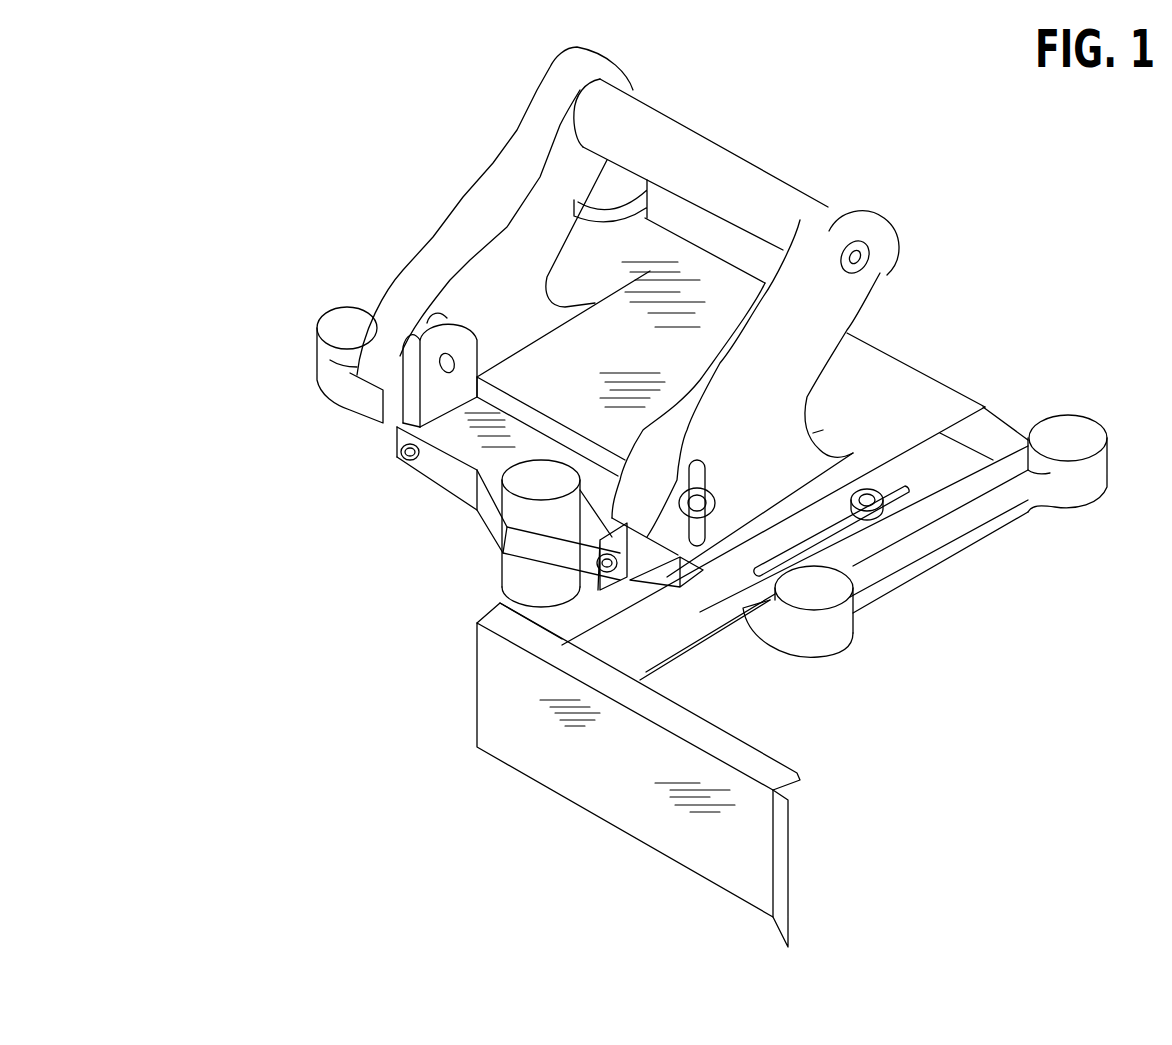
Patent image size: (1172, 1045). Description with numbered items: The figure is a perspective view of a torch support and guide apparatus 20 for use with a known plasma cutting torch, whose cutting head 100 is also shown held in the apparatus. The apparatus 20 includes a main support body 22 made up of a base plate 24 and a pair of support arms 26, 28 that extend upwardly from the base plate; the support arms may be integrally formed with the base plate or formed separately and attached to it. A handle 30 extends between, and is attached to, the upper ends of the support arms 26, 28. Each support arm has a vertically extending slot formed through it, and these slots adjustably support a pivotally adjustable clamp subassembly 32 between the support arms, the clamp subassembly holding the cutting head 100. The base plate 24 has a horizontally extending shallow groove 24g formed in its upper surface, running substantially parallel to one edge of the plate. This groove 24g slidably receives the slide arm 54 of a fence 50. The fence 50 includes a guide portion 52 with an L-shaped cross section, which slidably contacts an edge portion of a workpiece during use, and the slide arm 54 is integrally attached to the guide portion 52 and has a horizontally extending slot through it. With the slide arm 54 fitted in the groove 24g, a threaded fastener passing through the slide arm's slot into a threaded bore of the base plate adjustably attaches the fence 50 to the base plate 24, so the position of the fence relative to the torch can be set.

The torch support and guide apparatus 20 is at (357, 210).
The main support body 22 is at (260, 390).
The base plate 24 is at (903, 423).
The groove 24g is at (968, 420).
The support arm 26 is at (518, 309).
The support arm 28 is at (773, 443).
The handle 30 is at (720, 160).
The clamp subassembly 32 is at (457, 525).
The fence 50 is at (822, 750).
The guide portion 52 is at (613, 783).
The slide arm 54 is at (703, 643).
The cutting head 100 is at (477, 592).